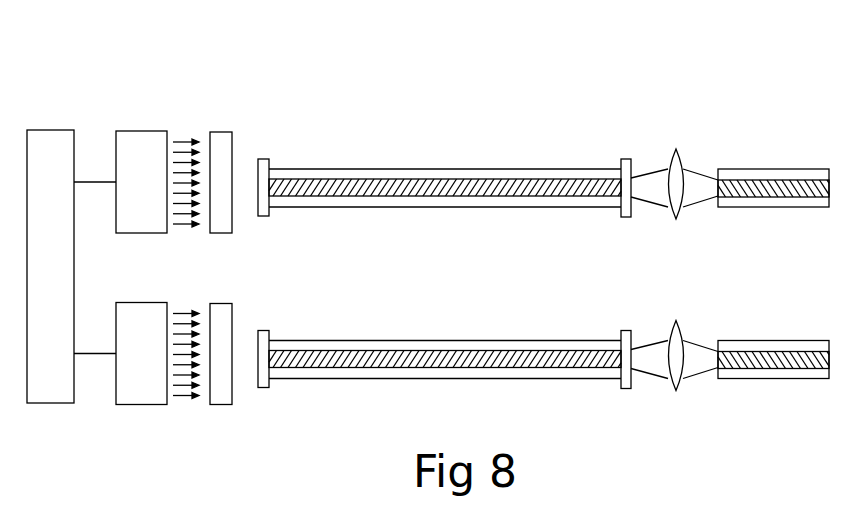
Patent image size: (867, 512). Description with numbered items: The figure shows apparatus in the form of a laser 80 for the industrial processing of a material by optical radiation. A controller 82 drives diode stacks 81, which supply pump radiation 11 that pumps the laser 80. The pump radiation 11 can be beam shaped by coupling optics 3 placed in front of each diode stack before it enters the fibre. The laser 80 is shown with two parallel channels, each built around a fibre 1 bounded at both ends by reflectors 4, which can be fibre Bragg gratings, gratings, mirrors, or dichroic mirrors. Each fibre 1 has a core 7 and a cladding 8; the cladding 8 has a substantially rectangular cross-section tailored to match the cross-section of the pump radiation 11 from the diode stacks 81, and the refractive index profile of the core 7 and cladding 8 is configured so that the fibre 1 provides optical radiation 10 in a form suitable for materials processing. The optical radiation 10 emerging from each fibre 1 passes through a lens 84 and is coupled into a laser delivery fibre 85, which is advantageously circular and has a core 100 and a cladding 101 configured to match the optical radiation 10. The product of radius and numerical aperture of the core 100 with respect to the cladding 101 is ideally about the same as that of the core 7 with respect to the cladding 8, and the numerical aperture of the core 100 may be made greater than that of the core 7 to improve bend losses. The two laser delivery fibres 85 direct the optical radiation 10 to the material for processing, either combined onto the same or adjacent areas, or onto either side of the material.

The laser 80 is at (234, 70).
The controller 82 is at (50, 128).
The diode stacks 81 is at (142, 131).
The coupling optics 3 is at (224, 130).
The pump radiation 11 is at (175, 224).
The reflectors 4 is at (262, 155).
The fibre 1 is at (445, 251).
The core 7 is at (407, 178).
The cladding 8 is at (478, 168).
The lens 84 is at (680, 153).
The optical radiation 10 is at (713, 169).
The laser delivery fibre 85 is at (773, 274).
The core 100 is at (777, 197).
The cladding 101 is at (820, 207).